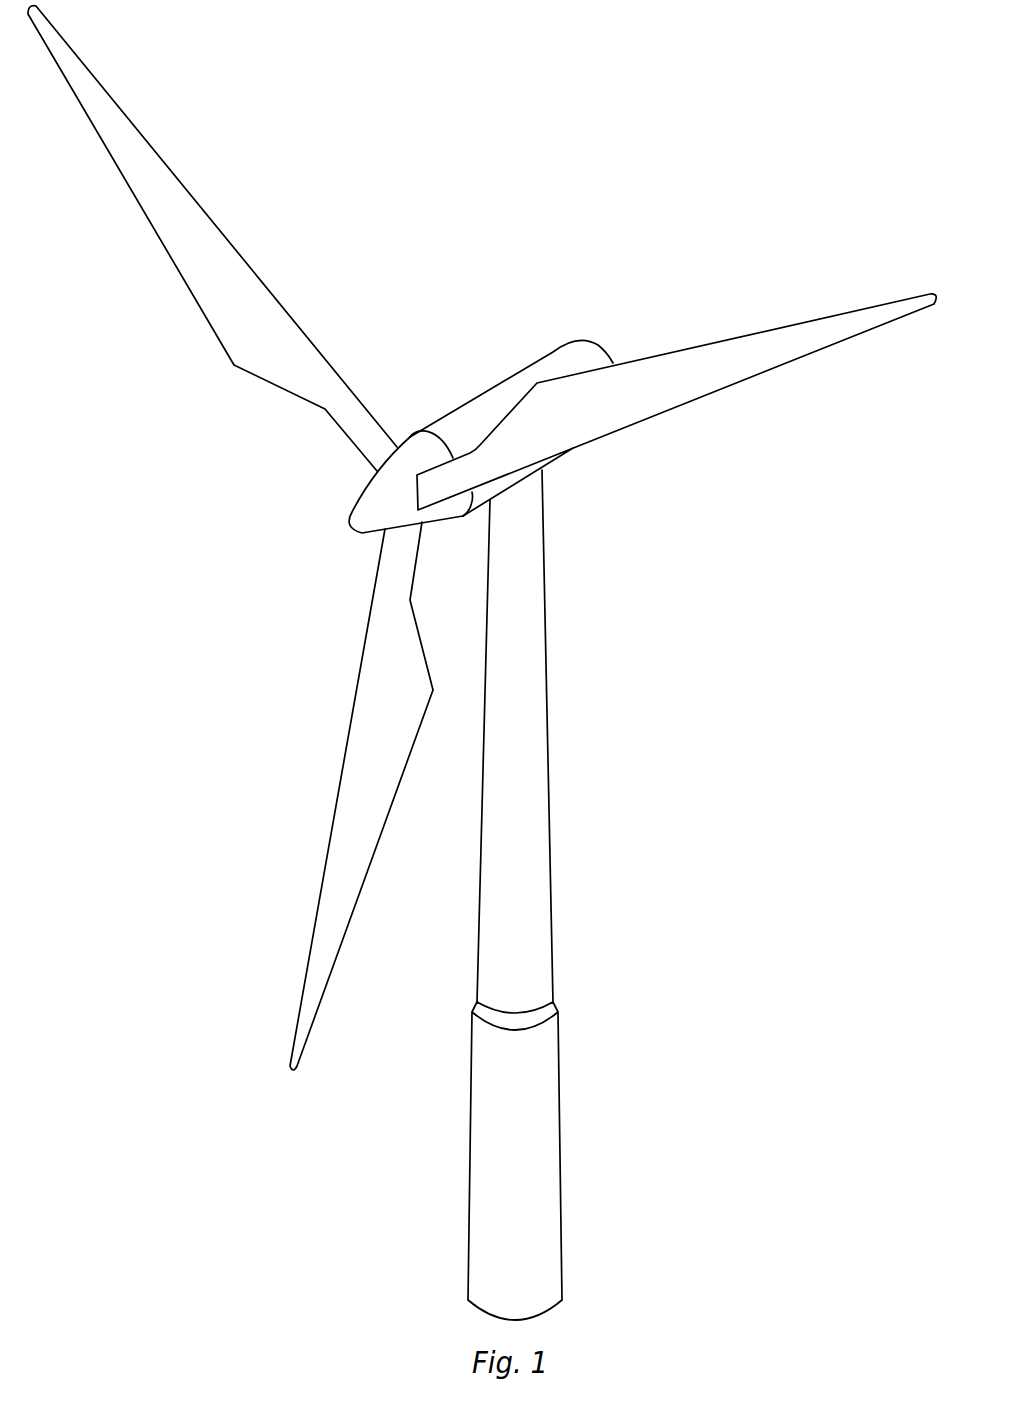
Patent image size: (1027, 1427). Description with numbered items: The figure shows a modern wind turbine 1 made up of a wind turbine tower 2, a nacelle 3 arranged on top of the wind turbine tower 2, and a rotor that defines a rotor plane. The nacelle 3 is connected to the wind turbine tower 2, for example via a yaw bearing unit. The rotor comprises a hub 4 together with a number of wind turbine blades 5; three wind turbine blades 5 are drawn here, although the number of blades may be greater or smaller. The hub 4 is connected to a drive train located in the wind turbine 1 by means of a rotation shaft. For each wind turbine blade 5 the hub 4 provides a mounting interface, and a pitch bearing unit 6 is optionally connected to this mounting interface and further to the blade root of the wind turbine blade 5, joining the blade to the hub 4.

The wind turbine 1 is at (482, 663).
The wind turbine tower 2 is at (535, 742).
The nacelle 3 is at (477, 410).
The hub 4 is at (373, 503).
The wind turbine blade 5 is at (249, 334).
The pitch bearing unit 6 is at (420, 507).